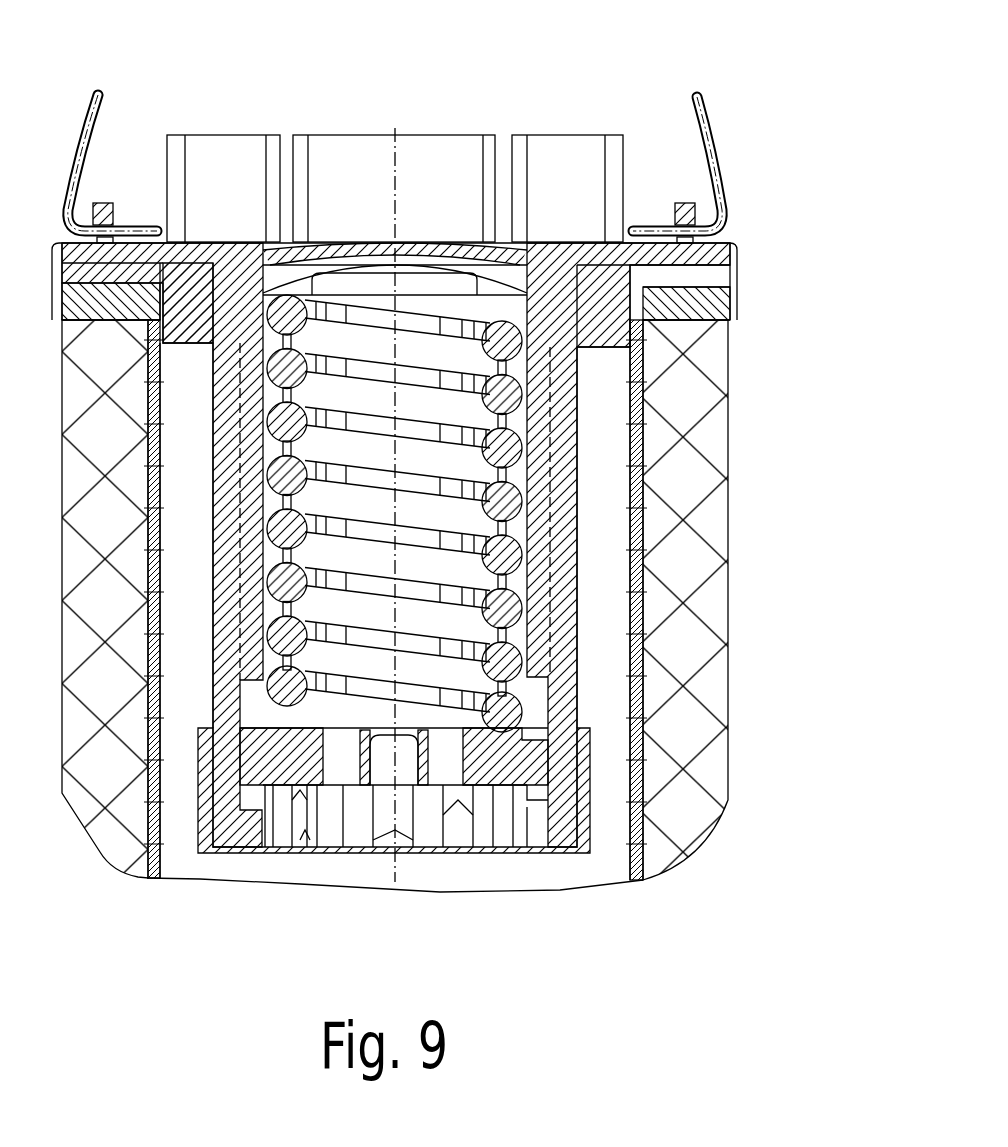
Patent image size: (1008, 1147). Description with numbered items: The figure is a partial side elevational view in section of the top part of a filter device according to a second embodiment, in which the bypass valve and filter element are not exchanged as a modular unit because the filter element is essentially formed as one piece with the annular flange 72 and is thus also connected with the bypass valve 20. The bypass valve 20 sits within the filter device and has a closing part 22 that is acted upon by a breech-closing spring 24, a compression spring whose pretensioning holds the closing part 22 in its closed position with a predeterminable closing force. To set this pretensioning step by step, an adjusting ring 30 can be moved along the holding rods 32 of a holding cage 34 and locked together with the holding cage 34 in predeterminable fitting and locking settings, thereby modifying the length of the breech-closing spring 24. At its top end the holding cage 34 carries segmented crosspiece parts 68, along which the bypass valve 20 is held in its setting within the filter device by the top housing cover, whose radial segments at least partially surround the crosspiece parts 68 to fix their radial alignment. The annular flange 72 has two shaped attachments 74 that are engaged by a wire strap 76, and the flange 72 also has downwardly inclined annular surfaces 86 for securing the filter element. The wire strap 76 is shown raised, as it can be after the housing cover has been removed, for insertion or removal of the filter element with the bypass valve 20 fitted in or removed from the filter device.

The bypass valve 20 is at (557, 435).
The closing part 22 is at (355, 242).
The breech-closing spring 24 is at (418, 330).
The adjusting ring 30 is at (590, 810).
The holding rods 32 is at (200, 600).
The holding cage 34 is at (195, 330).
The crosspiece parts 68 is at (233, 185).
The annular flange 72 is at (733, 253).
The shaped attachments 74 is at (103, 203).
The wire strap 76 is at (712, 135).
The downwardly inclined annular surfaces 86 is at (682, 283).